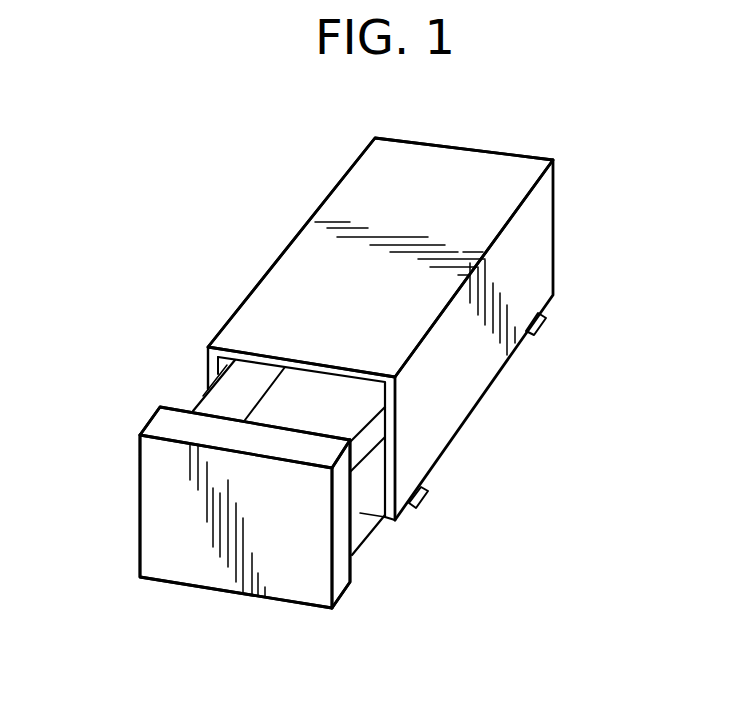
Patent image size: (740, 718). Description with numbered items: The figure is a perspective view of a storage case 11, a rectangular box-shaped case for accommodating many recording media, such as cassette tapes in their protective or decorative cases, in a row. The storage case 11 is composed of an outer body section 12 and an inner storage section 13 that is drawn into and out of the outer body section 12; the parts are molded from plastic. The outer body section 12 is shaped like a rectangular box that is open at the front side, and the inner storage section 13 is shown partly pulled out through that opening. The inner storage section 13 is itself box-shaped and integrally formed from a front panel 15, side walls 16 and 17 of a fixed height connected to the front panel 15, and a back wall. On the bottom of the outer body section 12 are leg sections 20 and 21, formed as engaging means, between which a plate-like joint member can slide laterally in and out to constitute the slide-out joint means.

The storage case 11 is at (222, 277).
The outer body section 12 is at (298, 292).
The inner storage section 13 is at (352, 602).
The front panel 15 is at (170, 474).
The side wall 16 is at (365, 515).
The side wall 17 is at (202, 400).
The leg section 20 is at (427, 494).
The leg section 21 is at (548, 316).